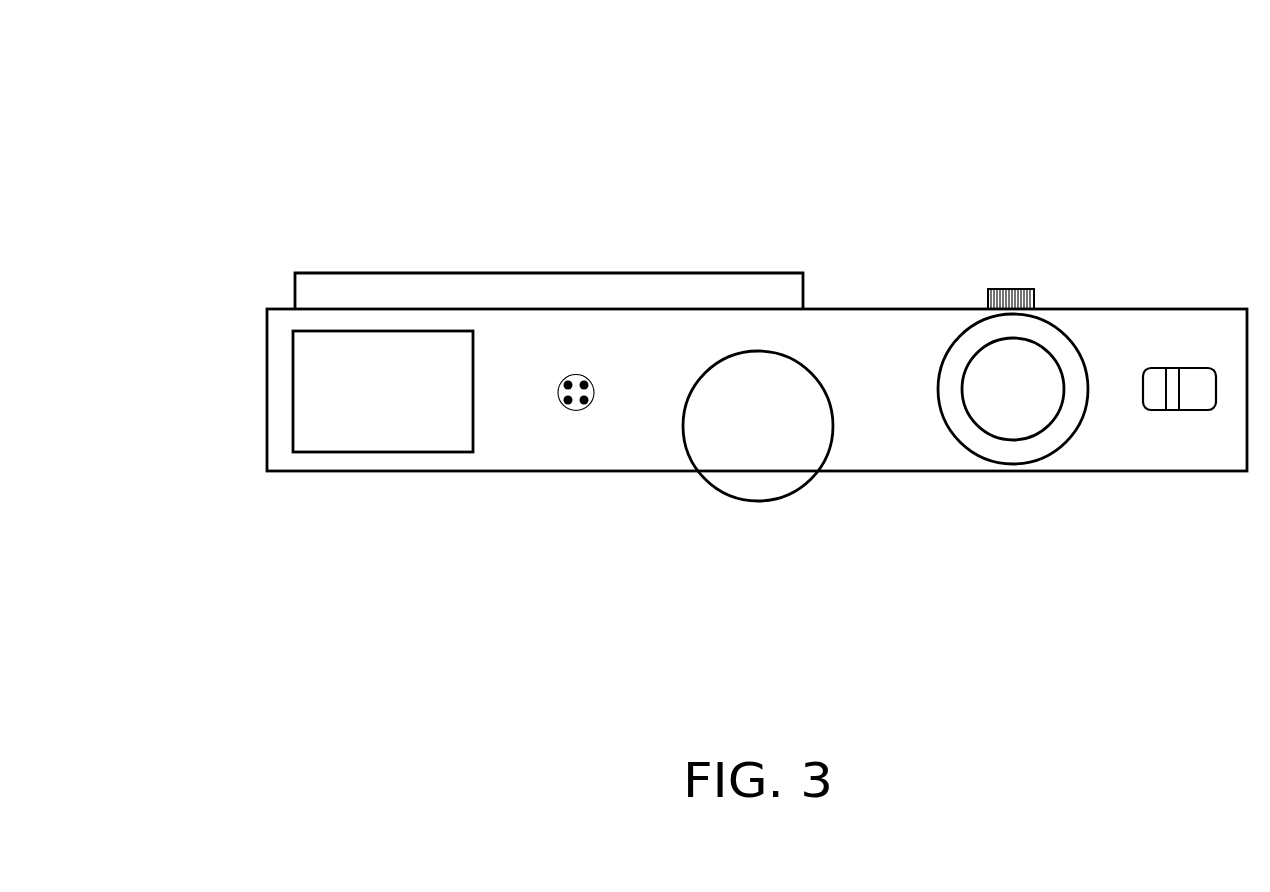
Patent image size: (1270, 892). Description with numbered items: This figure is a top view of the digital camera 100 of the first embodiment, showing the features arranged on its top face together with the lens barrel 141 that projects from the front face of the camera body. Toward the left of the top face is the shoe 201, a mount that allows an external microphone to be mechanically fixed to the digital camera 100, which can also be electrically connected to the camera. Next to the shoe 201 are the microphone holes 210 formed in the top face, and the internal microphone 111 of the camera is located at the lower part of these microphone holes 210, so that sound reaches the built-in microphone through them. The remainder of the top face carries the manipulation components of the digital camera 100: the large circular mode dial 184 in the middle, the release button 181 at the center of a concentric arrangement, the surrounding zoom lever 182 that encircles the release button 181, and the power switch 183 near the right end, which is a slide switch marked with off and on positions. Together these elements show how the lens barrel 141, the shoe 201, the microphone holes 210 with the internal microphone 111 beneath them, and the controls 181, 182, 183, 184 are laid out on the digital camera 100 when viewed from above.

The digital camera 100 is at (668, 243).
The lens barrel 141 is at (328, 272).
The shoe 201 is at (293, 407).
The microphone holes 210 is at (558, 386).
The internal microphone 111 is at (573, 411).
The mode dial 184 is at (766, 500).
The zoom lever 182 is at (1037, 447).
The release button 181 is at (1018, 395).
The power switch 183 is at (1156, 388).